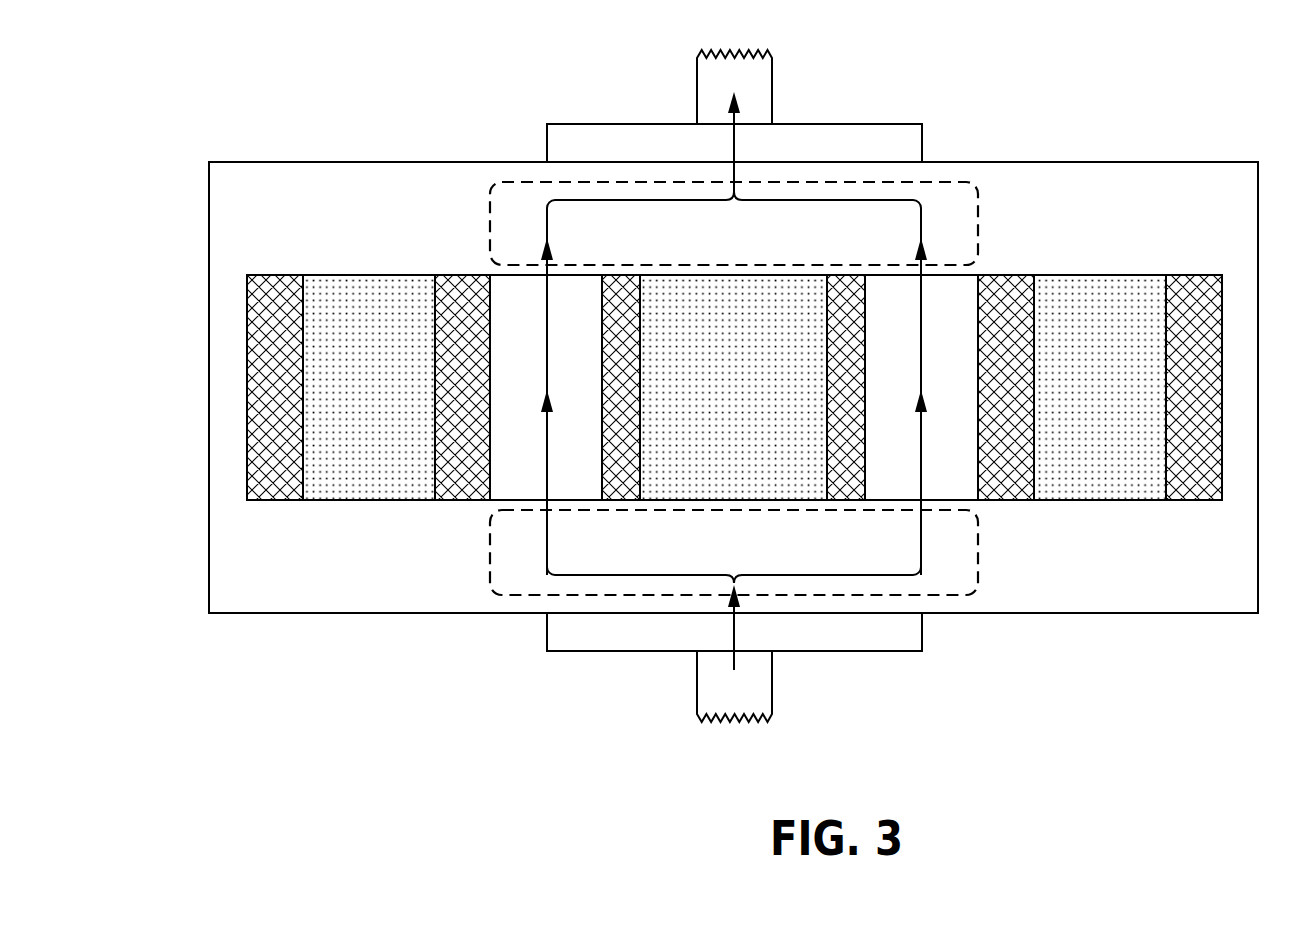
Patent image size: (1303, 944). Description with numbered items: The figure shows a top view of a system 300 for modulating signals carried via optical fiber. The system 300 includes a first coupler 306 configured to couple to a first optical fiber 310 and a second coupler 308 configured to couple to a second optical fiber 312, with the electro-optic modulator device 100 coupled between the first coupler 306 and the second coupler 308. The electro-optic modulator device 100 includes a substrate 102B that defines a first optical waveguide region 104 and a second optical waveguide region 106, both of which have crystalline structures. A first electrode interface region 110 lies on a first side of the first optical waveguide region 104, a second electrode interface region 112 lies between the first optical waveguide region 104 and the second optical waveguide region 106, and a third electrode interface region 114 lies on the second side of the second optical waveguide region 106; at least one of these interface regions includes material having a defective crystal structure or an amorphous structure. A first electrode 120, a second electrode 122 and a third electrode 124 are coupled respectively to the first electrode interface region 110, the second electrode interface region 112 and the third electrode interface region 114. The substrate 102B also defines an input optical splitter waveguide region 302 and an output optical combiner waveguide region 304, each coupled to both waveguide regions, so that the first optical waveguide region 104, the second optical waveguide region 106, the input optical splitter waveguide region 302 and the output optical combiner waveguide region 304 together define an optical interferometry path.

The electro-optic modulator device 100 is at (230, 380).
The substrate 102B is at (265, 613).
The first optical waveguide region 104 is at (524, 309).
The second optical waveguide region 106 is at (962, 304).
The first electrode interface region 110 is at (283, 275).
The second electrode interface region 112 is at (624, 415).
The third electrode interface region 114 is at (1180, 275).
The first electrode 120 is at (367, 500).
The second electrode 122 is at (755, 382).
The third electrode 124 is at (1100, 500).
The system 300 is at (1210, 121).
The input optical splitter waveguide region 302 is at (490, 537).
The output optical combiner waveguide region 304 is at (490, 200).
The first coupler 306 is at (600, 651).
The second coupler 308 is at (600, 124).
The first optical fiber 310 is at (772, 688).
The second optical fiber 312 is at (772, 83).